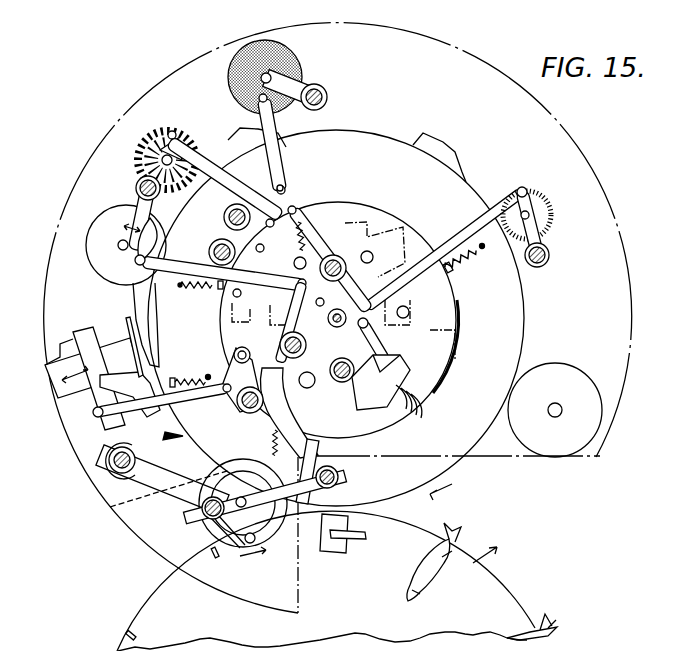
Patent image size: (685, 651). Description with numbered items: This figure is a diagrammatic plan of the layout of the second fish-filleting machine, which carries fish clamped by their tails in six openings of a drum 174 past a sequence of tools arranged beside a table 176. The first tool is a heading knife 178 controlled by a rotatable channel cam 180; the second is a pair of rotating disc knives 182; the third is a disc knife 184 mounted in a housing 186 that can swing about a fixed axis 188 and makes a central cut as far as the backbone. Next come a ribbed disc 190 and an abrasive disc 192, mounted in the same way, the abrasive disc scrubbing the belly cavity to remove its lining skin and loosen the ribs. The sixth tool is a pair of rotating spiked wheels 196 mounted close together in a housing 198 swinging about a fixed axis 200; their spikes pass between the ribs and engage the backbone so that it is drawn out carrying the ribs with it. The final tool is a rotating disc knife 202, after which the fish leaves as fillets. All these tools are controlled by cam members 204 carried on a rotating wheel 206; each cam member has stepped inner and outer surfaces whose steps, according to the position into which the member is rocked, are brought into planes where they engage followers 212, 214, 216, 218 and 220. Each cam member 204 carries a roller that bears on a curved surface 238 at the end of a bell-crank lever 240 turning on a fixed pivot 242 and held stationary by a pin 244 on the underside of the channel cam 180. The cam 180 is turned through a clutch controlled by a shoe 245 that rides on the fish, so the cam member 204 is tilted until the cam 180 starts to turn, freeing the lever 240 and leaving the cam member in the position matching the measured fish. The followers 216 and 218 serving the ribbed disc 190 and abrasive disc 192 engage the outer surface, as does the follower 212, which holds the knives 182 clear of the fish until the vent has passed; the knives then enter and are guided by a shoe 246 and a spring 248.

The drum 174 is at (386, 137).
The table 176 is at (500, 597).
The heading knife 178 is at (183, 436).
The channel cam 180 is at (263, 528).
The rotating disc knives 182 is at (126, 317).
The disc knife 184 is at (113, 270).
The housing 186 is at (133, 203).
The fixed axis 188 is at (143, 185).
The ribbed disc 190 is at (165, 130).
The abrasive disc 192 is at (232, 59).
The rotating spiked wheels 196 is at (546, 217).
The housing 198 is at (549, 243).
The fixed axis 200 is at (550, 257).
The rotating disc knife 202 is at (556, 452).
The cam member 204 is at (455, 397).
The rotating wheel 206 is at (455, 352).
The follower 212 is at (236, 347).
The follower 214 is at (350, 262).
The follower 216 is at (224, 228).
The follower 218 is at (298, 210).
The follower 220 is at (382, 292).
The curved surface 238 is at (370, 425).
The bell-crank lever 240 is at (345, 464).
The fixed pivot 242 is at (345, 484).
The pin 244 is at (107, 500).
The shoe 245 is at (335, 548).
The shoe 246 is at (153, 408).
The spring 248 is at (193, 374).